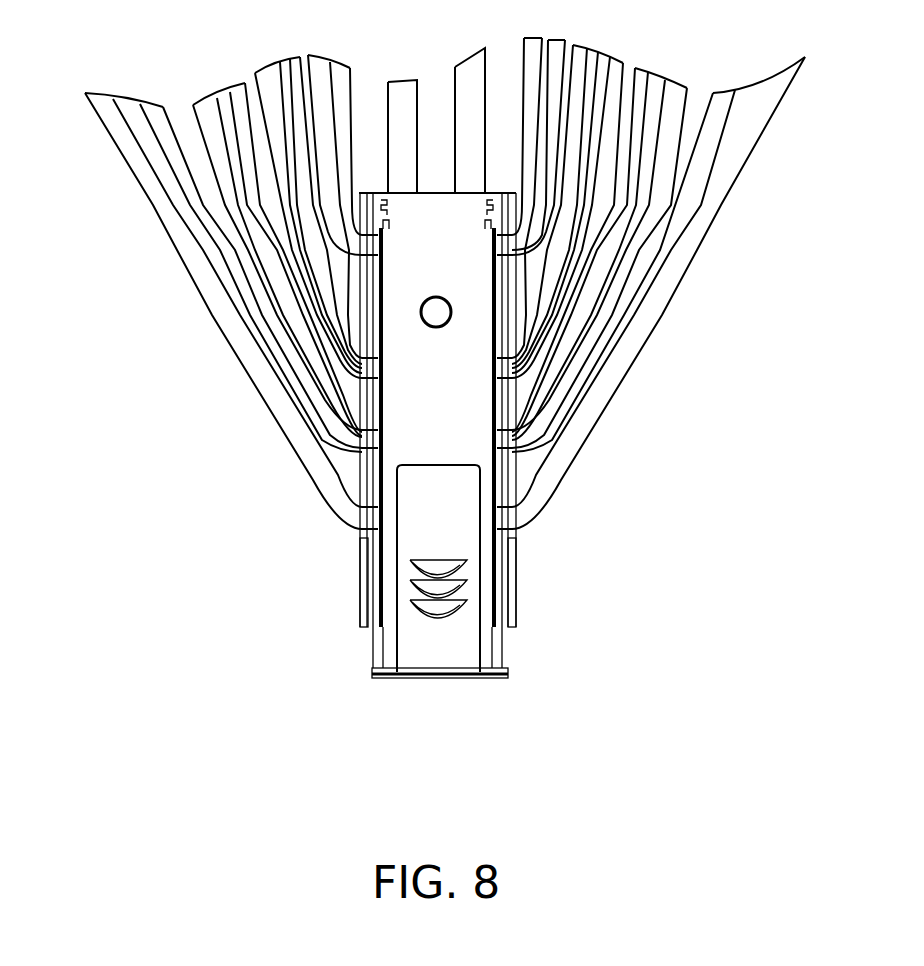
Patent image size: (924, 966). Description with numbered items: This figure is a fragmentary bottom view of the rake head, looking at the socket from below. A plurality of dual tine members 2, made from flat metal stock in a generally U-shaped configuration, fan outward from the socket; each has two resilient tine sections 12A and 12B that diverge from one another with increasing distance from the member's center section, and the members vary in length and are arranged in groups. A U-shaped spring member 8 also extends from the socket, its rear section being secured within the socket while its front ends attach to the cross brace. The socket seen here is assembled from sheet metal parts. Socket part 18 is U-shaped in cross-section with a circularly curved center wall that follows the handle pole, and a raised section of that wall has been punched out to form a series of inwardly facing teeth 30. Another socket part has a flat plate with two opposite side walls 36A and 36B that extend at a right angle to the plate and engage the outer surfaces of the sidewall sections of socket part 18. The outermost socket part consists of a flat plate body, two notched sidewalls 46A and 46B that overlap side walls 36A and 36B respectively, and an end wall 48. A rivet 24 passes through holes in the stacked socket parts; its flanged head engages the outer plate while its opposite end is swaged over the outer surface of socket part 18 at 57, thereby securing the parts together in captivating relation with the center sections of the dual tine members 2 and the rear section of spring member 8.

The dual tine member 2 is at (195, 322).
The spring member 8 is at (510, 108).
The tine section 12A is at (282, 175).
The tine section 12B is at (560, 128).
The socket part 18 is at (440, 690).
The rivet 24 is at (480, 312).
The teeth 30 is at (430, 604).
The side wall 36A is at (380, 588).
The side wall 36B is at (518, 612).
The sidewall 46A is at (360, 553).
The sidewall 46B is at (518, 580).
The end wall 48 is at (385, 680).
The swaged end of rivet 57 is at (432, 312).